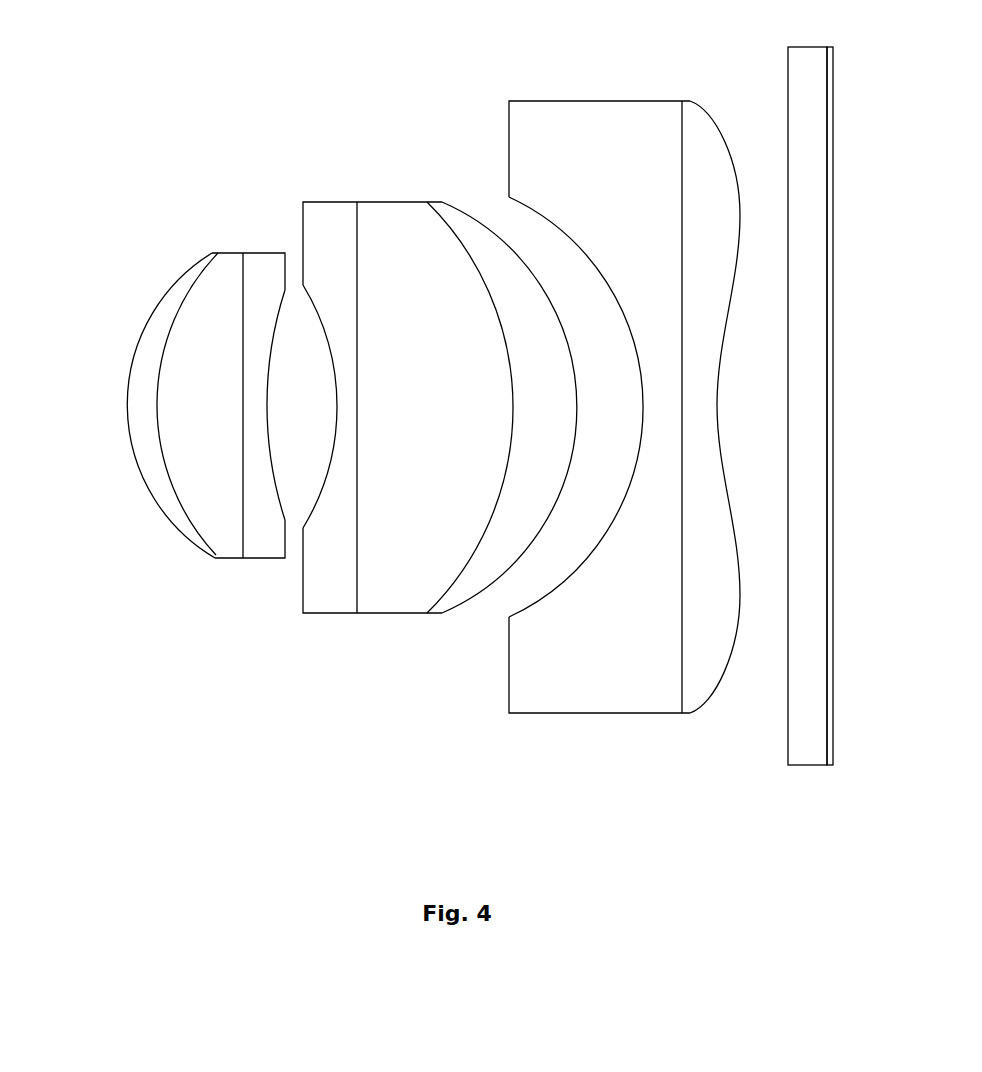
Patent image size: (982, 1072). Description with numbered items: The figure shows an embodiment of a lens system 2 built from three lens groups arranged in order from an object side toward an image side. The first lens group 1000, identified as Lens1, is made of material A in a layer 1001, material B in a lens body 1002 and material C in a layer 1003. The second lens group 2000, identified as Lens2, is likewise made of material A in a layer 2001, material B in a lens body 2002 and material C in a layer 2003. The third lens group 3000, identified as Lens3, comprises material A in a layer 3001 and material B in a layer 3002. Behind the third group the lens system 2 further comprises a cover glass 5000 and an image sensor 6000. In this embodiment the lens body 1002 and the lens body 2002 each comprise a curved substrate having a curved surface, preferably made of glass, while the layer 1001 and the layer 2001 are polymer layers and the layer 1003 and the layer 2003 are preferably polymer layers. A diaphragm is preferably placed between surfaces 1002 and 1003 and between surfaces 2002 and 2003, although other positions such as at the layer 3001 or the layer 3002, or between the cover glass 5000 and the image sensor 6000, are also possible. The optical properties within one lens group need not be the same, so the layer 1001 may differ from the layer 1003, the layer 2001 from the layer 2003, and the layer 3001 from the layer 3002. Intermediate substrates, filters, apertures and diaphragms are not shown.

The lens system 2 is at (98, 320).
The first lens group 1000 is at (245, 247).
The layer 1001 is at (160, 480).
The lens body 1002 is at (215, 463).
The layer 1003 is at (263, 533).
The second lens group 2000 is at (402, 193).
The layer 2001 is at (333, 580).
The lens body 2002 is at (400, 562).
The layer 2003 is at (475, 570).
The third lens group 3000 is at (638, 77).
The layer 3001 is at (595, 680).
The layer 3002 is at (702, 670).
The cover glass 5000 is at (800, 753).
The image sensor 6000 is at (833, 737).